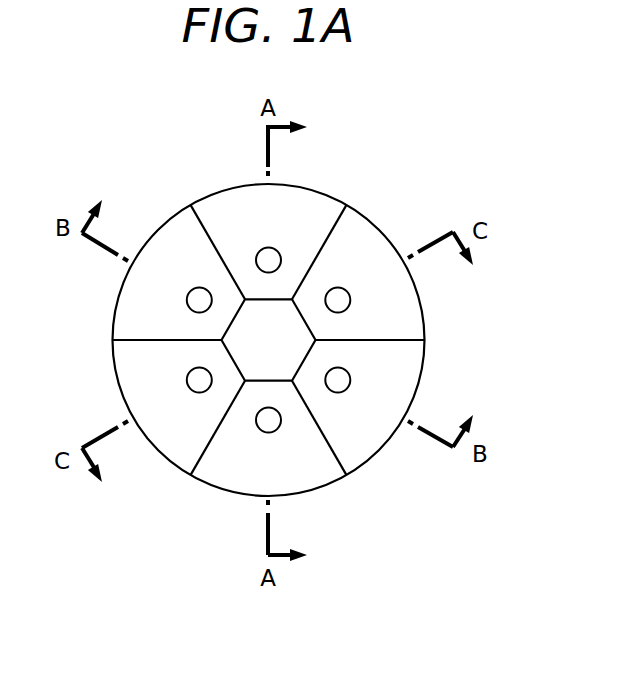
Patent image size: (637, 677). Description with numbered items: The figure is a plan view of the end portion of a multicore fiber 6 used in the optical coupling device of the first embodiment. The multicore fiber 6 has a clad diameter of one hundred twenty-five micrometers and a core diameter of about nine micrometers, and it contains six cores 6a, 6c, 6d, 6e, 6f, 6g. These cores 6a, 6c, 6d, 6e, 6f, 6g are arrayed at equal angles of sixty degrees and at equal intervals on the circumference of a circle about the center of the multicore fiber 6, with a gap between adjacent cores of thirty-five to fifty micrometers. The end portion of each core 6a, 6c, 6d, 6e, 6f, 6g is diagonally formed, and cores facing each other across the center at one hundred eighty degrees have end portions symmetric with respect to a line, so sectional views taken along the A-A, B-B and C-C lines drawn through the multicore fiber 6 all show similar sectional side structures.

The multicore fiber 6 is at (177, 163).
The core 6a is at (280, 250).
The core 6c is at (277, 431).
The core 6d is at (195, 288).
The core 6e is at (187, 379).
The core 6f is at (350, 306).
The core 6g is at (350, 380).